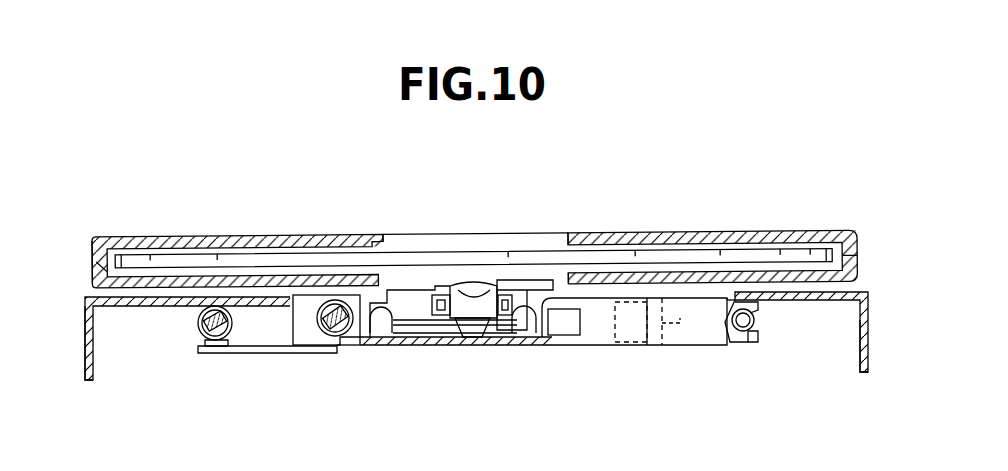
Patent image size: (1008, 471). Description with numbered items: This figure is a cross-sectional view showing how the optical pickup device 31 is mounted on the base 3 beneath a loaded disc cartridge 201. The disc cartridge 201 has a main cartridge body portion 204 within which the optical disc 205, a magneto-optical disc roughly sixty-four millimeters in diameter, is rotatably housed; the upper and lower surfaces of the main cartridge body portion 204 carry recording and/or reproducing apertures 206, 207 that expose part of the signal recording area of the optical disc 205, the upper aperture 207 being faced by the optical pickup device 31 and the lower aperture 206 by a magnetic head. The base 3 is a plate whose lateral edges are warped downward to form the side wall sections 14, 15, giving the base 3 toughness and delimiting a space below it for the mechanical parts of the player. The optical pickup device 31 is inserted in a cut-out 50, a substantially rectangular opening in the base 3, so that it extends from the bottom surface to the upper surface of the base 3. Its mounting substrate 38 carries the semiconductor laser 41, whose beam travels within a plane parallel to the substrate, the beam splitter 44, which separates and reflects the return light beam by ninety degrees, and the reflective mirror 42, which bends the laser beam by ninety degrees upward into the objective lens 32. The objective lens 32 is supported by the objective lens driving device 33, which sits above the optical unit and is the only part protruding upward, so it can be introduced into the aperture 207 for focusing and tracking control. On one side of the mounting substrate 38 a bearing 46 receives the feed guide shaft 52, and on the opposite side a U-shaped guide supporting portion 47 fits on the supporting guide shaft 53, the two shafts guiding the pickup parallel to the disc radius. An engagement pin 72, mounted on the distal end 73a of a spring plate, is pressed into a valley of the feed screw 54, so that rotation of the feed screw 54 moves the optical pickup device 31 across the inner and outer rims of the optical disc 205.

The base 3 is at (868, 318).
The side wall section 14 is at (82, 362).
The side wall section 15 is at (868, 358).
The optical pickup device 31 is at (615, 352).
The objective lens 32 is at (478, 286).
The objective lens driving device 33 is at (522, 288).
The mounting substrate 38 is at (688, 335).
The semiconductor laser 41 is at (640, 343).
The reflective mirror 42 is at (470, 338).
The beam splitter 44 is at (560, 335).
The bearing 46 is at (331, 336).
The guide supporting portion 47 is at (740, 344).
The cut-out 50 is at (735, 303).
The feed guide shaft 52 is at (317, 328).
The supporting guide shaft 53 is at (752, 343).
The feed screw 54 is at (200, 334).
The engagement pin 72 is at (215, 348).
The distal end of spring plate 73a is at (245, 354).
The disc cartridge 201 is at (830, 226).
The main cartridge body portion 204 is at (108, 236).
The optical disc 205 is at (174, 262).
The recording and/or reproducing aperture 206 is at (386, 237).
The recording and/or reproducing aperture 207 is at (565, 282).